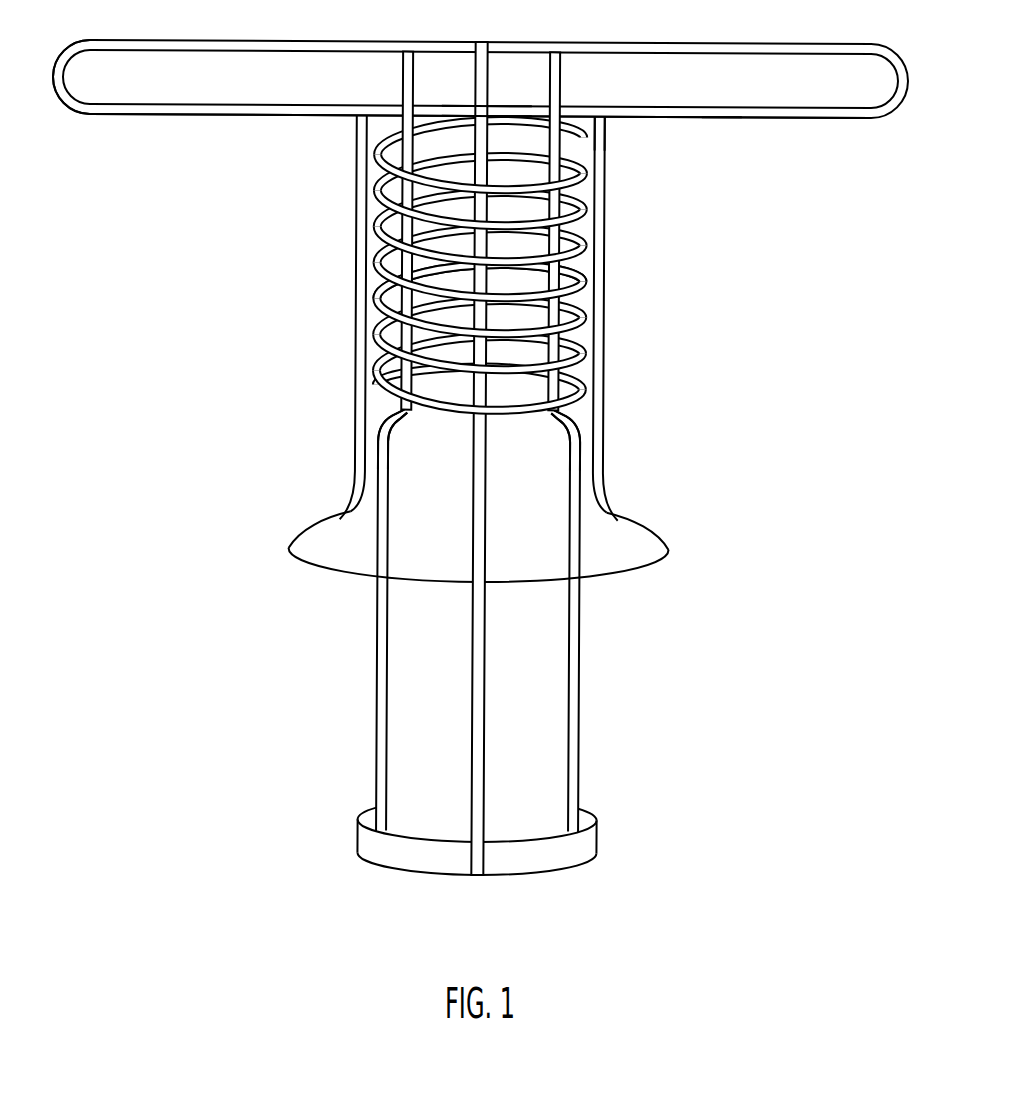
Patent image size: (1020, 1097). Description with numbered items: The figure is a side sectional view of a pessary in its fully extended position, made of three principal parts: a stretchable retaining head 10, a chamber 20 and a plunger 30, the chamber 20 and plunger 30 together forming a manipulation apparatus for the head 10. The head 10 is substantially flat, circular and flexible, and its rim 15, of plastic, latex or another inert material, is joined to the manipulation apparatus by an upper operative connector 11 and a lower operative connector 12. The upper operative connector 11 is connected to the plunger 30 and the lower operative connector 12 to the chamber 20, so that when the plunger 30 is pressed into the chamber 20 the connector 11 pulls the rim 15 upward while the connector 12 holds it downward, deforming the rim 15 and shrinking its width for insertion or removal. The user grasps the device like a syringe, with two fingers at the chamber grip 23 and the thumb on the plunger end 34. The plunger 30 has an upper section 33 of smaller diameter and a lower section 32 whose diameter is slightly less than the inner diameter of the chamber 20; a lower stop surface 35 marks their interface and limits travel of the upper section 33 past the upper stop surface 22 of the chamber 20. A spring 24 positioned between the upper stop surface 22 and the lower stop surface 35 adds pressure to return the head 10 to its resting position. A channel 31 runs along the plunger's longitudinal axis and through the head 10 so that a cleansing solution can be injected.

The stretchable retaining head 10 is at (724, 140).
The upper operative connector 11 is at (178, 41).
The lower operative connector 12 is at (240, 115).
The rim 15 is at (53, 80).
The chamber 20 is at (604, 332).
The upper stop surface 22 is at (600, 123).
The chamber grip 23 is at (667, 550).
The spring 24 is at (519, 476).
The plunger 30 is at (580, 700).
The channel 31 is at (478, 868).
The lower section 32 is at (377, 698).
The upper section 33 is at (372, 281).
The plunger end 34 is at (584, 847).
The lower stop surface 35 is at (388, 422).